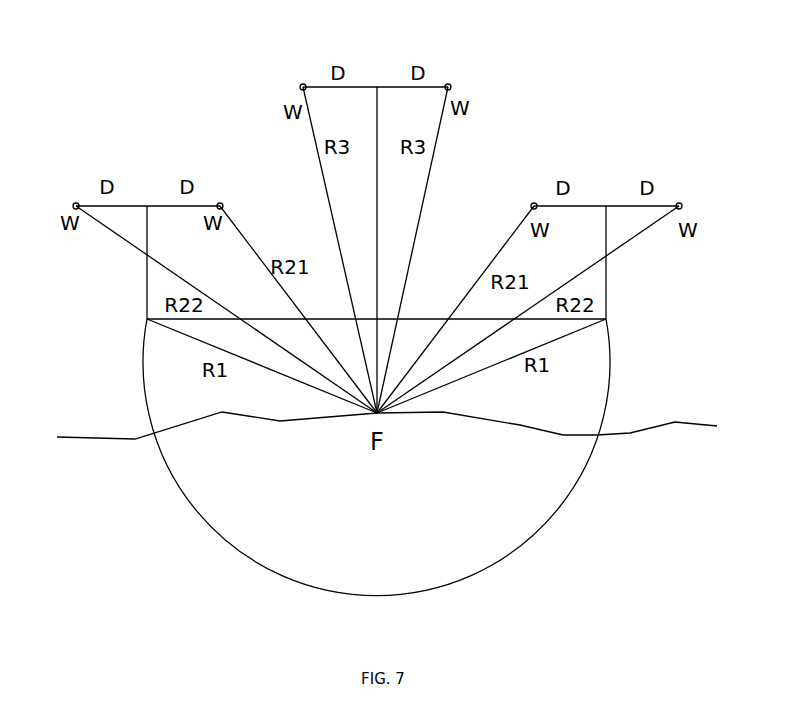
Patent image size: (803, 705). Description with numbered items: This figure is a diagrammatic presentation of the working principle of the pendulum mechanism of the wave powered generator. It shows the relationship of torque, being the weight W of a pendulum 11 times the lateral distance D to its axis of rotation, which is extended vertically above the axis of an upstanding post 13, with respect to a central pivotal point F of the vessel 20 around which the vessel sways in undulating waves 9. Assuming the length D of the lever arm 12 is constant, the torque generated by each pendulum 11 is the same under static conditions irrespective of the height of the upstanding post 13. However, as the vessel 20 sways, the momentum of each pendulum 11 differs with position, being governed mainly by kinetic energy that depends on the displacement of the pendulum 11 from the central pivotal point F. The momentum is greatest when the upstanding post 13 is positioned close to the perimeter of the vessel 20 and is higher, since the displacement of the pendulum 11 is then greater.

The undulating waves 9 is at (408, 382).
The pendulum 11 is at (216, 109).
The lever arm 12 is at (359, 108).
The upstanding post 13 is at (324, 240).
The vessel 20 is at (376, 457).